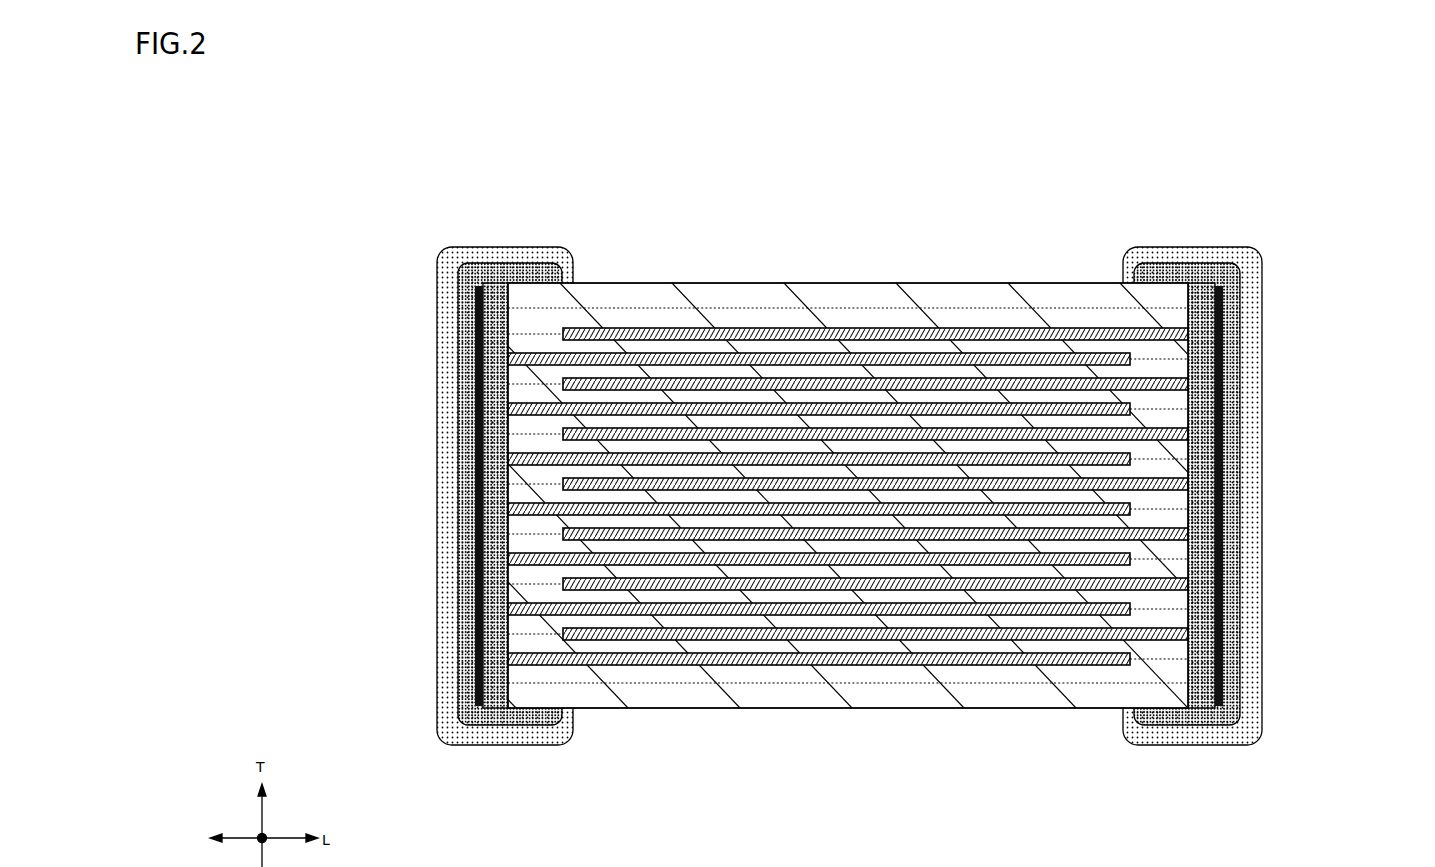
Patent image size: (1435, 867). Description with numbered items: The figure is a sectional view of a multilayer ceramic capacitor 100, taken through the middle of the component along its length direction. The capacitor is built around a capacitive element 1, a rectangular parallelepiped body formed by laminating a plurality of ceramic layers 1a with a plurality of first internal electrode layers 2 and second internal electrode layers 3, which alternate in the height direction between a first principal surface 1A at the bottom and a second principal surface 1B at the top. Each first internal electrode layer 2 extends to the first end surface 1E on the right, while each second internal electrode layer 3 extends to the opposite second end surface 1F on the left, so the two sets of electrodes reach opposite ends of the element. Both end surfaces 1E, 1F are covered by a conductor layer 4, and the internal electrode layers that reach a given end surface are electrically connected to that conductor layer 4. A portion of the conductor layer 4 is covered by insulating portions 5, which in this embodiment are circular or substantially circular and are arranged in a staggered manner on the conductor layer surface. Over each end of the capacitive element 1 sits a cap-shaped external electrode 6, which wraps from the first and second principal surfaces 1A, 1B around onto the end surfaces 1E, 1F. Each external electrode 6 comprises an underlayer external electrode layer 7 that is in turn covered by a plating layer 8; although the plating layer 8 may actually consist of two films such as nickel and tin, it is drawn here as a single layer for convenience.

The multilayer ceramic capacitor 100 is at (290, 98).
The capacitive element 1 is at (773, 490).
The ceramic layer 1a is at (861, 302).
The first principal surface 1A is at (820, 736).
The second principal surface 1B is at (804, 270).
The first end surface 1E is at (1297, 474).
The second end surface 1F is at (393, 473).
The first internal electrode layer 2 is at (688, 300).
The second internal electrode layer 3 is at (747, 350).
The conductor layer 4 is at (493, 298).
The insulating portion 5 is at (477, 330).
The external electrode 6 is at (357, 349).
The underlayer external electrode layer 7 is at (457, 355).
The plating layer 8 is at (445, 392).